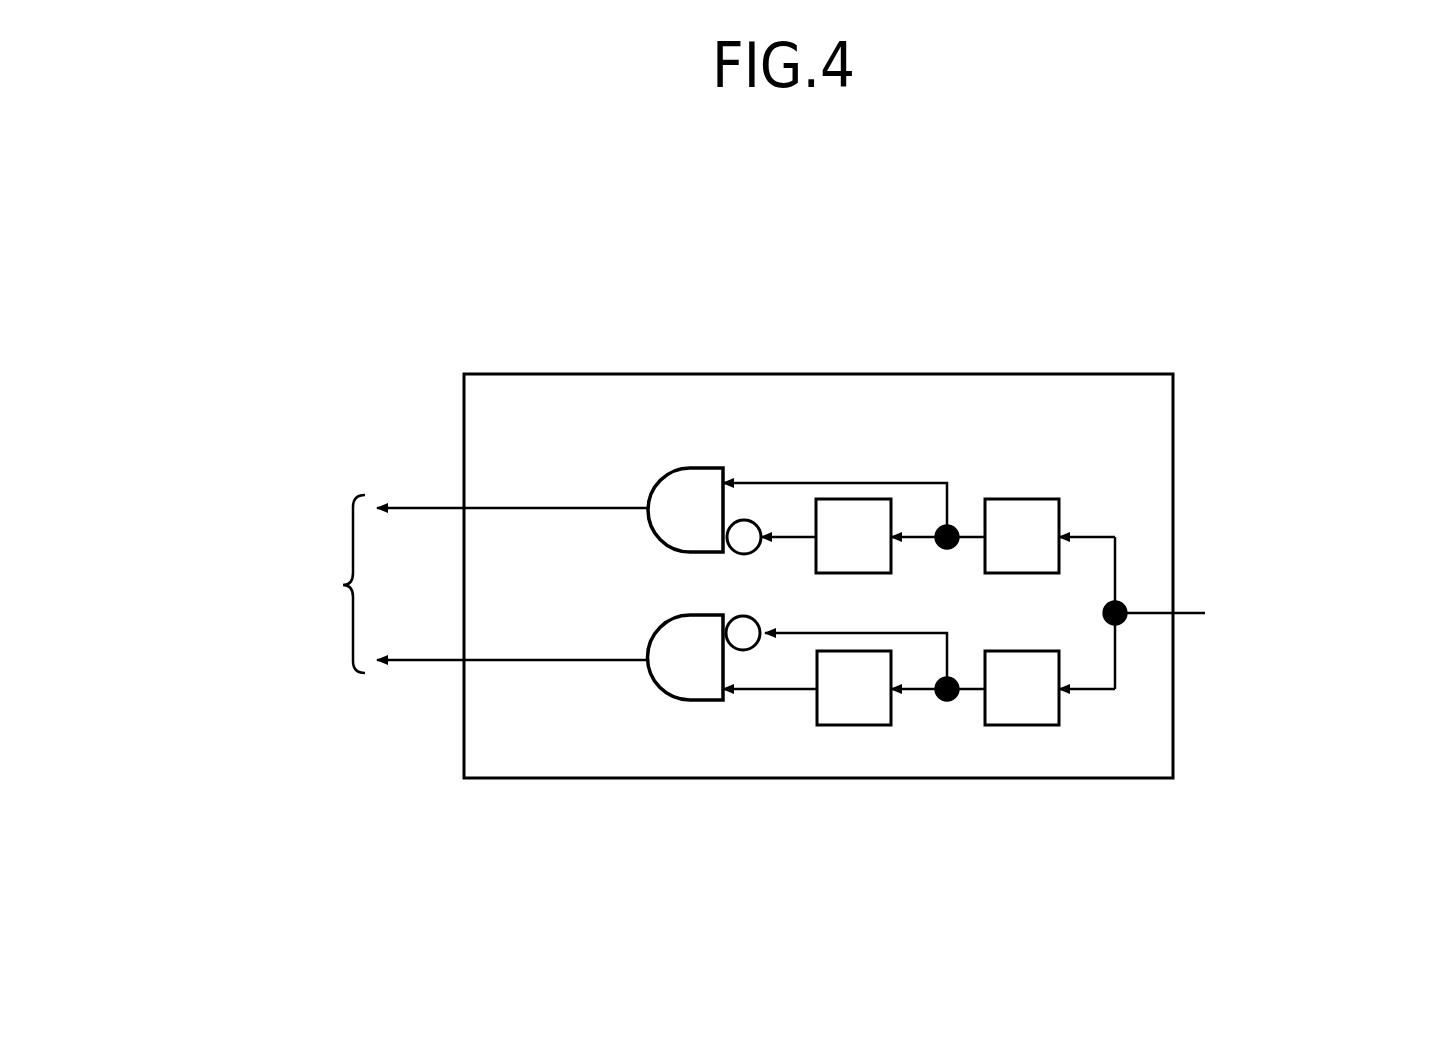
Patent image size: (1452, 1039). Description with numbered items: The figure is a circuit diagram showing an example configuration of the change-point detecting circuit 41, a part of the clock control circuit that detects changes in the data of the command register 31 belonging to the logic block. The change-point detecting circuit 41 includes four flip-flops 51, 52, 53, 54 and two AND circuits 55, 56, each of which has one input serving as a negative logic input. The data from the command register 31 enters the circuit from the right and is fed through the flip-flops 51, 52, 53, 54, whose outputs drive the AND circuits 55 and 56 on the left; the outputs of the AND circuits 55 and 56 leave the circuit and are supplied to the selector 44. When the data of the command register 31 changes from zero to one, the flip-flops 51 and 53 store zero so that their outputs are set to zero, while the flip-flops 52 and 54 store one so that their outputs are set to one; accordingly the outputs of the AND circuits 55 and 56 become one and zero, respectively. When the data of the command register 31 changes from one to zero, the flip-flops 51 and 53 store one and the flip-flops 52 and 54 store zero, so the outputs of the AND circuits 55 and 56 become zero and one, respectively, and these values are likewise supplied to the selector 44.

The change-point detecting circuit 41 is at (1018, 374).
The flip-flop 51 is at (865, 574).
The flip-flop 52 is at (1035, 574).
The flip-flop 53 is at (865, 726).
The flip-flop 54 is at (1035, 726).
The AND circuit 55 is at (660, 540).
The AND circuit 56 is at (658, 692).
The selector 44 is at (255, 584).
The command register 31 is at (1251, 613).